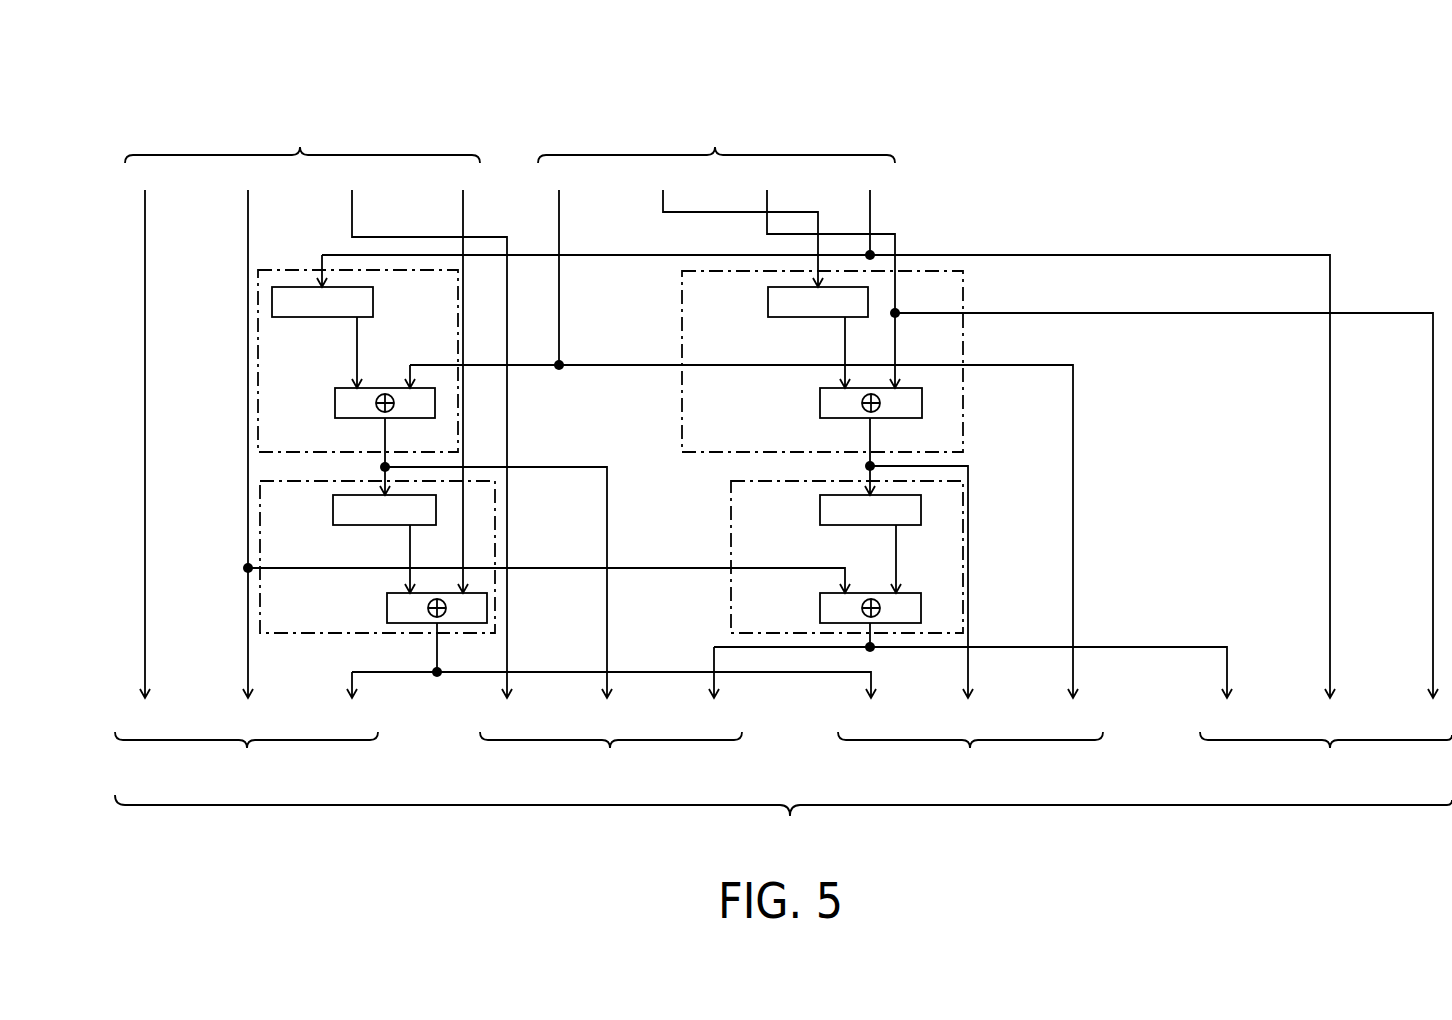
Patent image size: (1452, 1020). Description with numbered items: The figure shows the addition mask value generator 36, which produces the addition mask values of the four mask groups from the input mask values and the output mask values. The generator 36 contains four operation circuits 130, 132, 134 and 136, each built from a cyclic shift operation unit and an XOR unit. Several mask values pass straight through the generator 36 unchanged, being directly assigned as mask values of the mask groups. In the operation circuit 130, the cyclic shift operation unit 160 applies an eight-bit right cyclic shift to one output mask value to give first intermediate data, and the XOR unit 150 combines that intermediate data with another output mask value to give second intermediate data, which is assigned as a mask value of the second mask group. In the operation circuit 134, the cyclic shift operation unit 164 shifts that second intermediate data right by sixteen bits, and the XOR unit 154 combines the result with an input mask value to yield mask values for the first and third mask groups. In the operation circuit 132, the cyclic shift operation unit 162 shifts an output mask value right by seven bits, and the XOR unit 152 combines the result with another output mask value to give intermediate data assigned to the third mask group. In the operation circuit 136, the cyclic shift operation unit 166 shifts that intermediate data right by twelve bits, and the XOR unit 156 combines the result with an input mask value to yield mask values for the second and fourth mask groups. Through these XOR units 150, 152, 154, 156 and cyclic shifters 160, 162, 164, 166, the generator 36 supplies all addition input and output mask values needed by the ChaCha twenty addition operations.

The addition mask value generator 36 is at (124, 63).
The operation circuit 130 is at (258, 350).
The operation circuit 132 is at (963, 290).
The operation circuit 134 is at (260, 611).
The operation circuit 136 is at (963, 557).
The XOR unit 150 is at (335, 403).
The XOR unit 152 is at (820, 403).
The XOR unit 154 is at (387, 608).
The XOR unit 156 is at (820, 608).
The cyclic shift operation unit 160 is at (373, 301).
The cyclic shift operation unit 162 is at (768, 302).
The cyclic shift operation unit 164 is at (333, 511).
The cyclic shift operation unit 166 is at (820, 511).